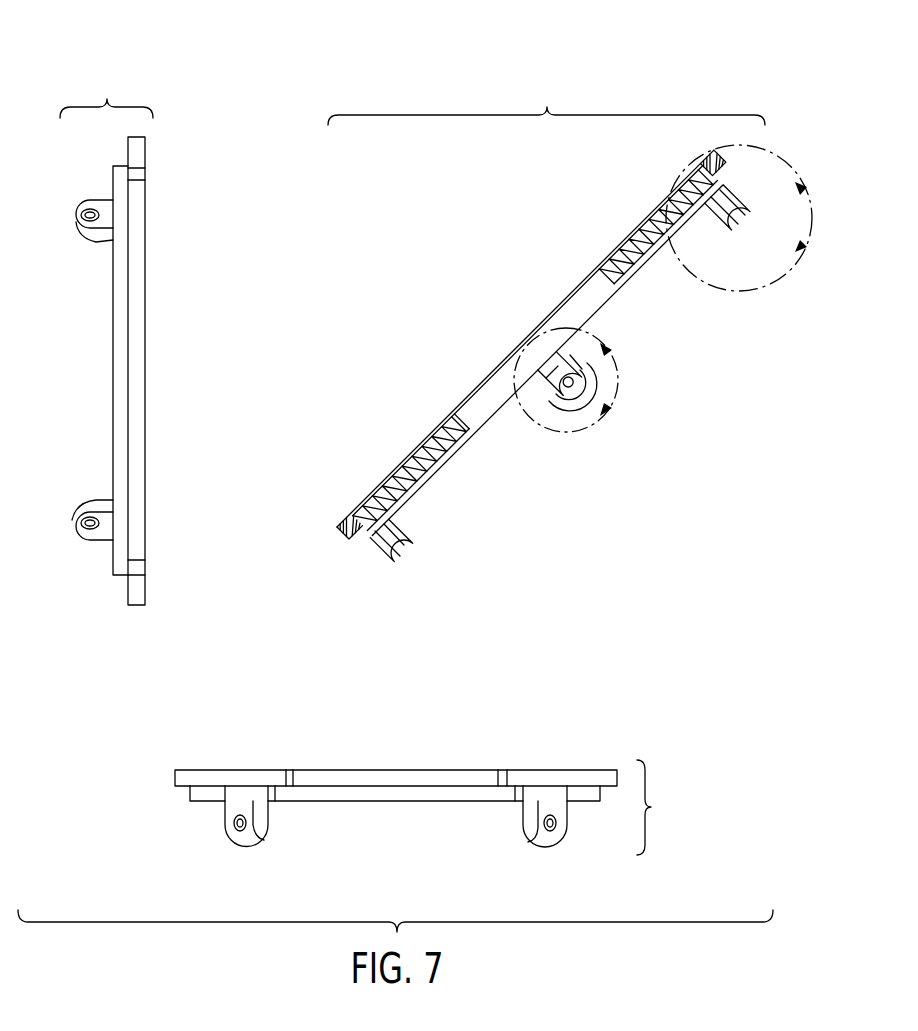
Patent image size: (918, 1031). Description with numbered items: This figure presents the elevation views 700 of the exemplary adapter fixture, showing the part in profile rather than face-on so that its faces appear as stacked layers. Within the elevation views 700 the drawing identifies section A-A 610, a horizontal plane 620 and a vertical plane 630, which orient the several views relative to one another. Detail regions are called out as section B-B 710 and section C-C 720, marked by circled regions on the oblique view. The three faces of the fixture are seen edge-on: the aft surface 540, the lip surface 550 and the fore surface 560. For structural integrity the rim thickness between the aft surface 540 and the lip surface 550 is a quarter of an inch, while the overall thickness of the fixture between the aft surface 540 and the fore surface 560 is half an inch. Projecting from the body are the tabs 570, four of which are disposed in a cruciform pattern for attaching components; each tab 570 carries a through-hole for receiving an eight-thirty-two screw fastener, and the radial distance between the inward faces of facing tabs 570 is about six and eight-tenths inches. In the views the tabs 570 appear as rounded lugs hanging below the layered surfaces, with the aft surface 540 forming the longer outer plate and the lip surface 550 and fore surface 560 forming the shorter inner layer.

The aft surface 540 is at (155, 298).
The lip surface 550 is at (113, 349).
The fore surface 560 is at (103, 425).
The tab 570 is at (80, 540).
The section A-A 610 is at (546, 100).
The horizontal plane 620 is at (663, 807).
The vertical plane 630 is at (106, 94).
The elevation views 700 is at (680, 78).
The section B-B 710 is at (565, 435).
The section C-C 720 is at (737, 293).